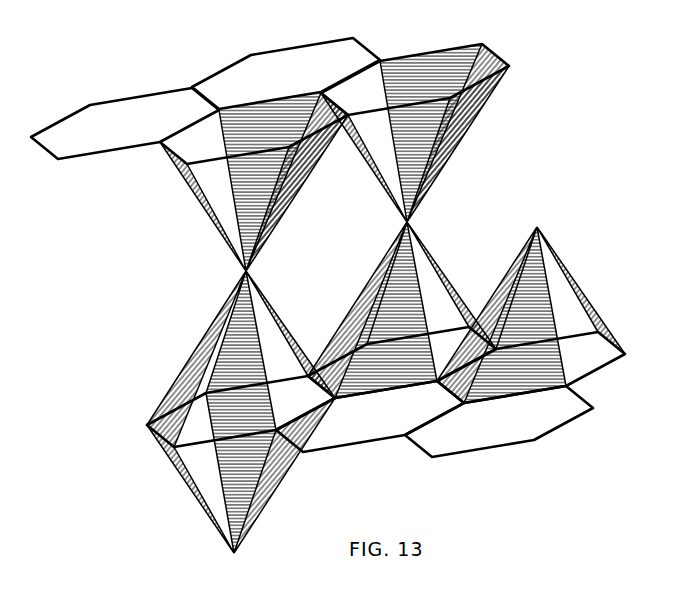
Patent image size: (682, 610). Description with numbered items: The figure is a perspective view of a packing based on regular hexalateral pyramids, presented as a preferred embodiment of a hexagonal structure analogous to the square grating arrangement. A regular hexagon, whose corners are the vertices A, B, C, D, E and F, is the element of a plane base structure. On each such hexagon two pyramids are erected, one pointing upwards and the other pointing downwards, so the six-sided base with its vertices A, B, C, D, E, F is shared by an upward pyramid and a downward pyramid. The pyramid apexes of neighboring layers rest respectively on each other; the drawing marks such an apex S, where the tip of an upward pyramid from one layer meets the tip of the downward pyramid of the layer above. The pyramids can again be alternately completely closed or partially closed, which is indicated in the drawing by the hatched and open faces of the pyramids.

The common apex of adjoining hexagonal pyramids S is at (248, 272).
The vertex A of regular hexagon A is at (147, 425).
The vertex B of regular hexagon B is at (174, 447).
The vertex C of regular hexagon C is at (277, 446).
The vertex D of regular hexagon D is at (336, 399).
The vertex E of regular hexagon E is at (308, 376).
The vertex F of regular hexagon F is at (206, 393).